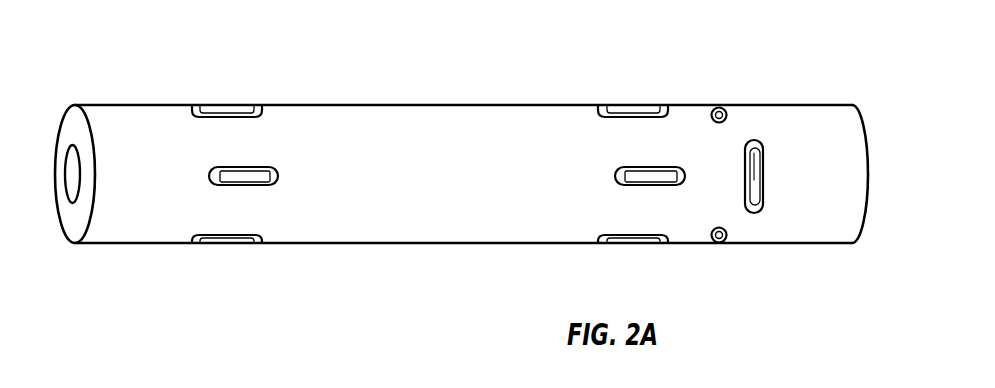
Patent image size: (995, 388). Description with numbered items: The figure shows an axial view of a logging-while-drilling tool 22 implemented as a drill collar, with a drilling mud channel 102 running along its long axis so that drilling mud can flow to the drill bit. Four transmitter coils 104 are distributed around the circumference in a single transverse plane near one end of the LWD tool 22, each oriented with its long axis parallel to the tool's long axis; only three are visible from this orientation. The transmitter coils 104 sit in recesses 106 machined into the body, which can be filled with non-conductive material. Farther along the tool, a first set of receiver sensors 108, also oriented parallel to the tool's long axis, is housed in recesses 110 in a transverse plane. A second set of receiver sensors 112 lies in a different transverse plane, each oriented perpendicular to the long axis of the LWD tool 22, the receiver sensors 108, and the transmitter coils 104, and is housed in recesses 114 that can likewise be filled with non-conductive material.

The LWD tool 22 is at (138, 245).
The drilling mud channel 102 is at (70, 168).
The transmitter coils 104 is at (227, 237).
The recesses 106 is at (263, 242).
The receiver sensors 108 is at (635, 238).
The recesses 110 is at (598, 240).
The receiver sensors 112 is at (718, 227).
The recesses 114 is at (718, 123).